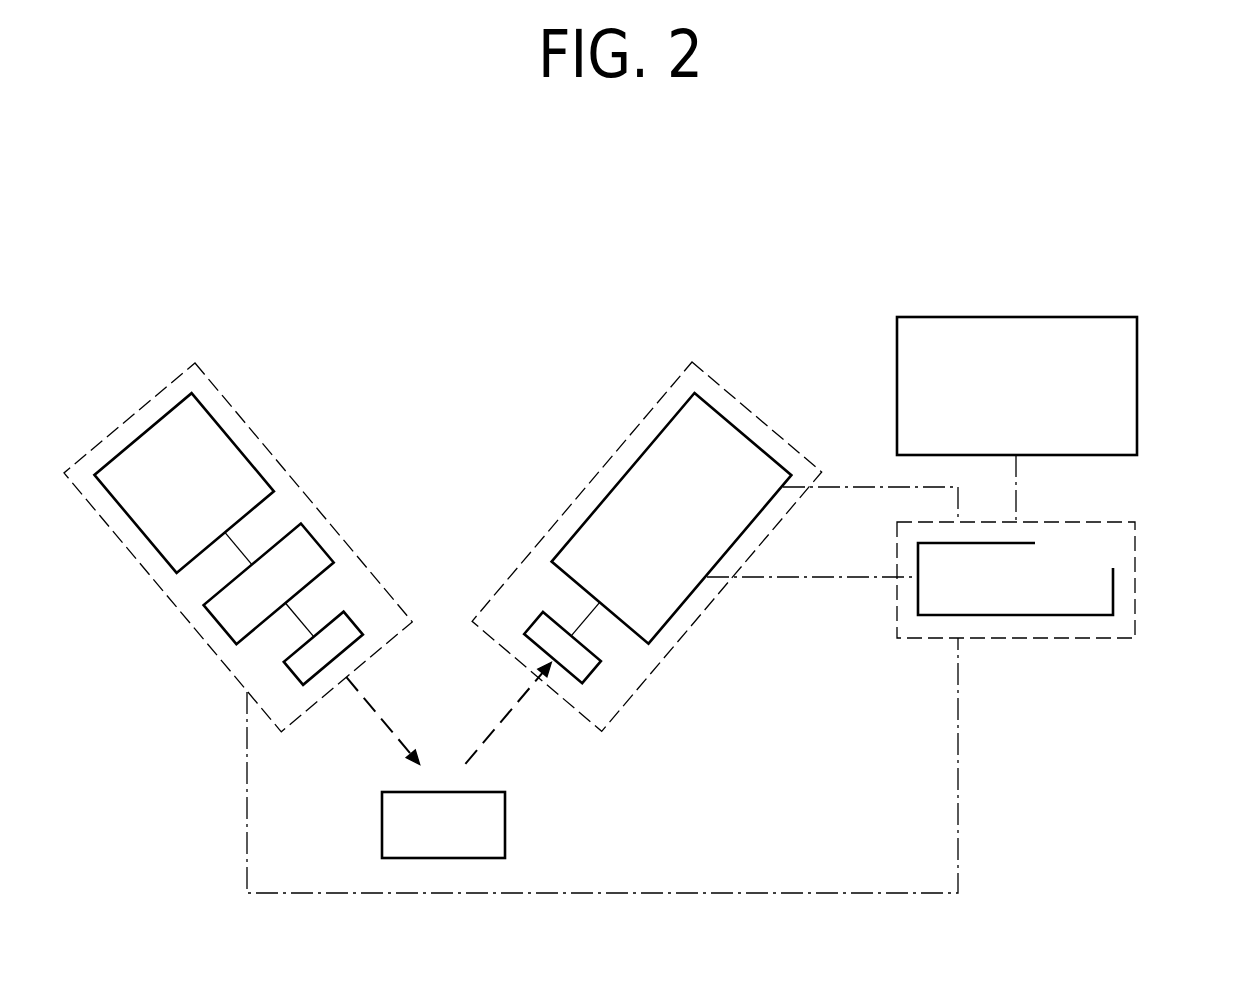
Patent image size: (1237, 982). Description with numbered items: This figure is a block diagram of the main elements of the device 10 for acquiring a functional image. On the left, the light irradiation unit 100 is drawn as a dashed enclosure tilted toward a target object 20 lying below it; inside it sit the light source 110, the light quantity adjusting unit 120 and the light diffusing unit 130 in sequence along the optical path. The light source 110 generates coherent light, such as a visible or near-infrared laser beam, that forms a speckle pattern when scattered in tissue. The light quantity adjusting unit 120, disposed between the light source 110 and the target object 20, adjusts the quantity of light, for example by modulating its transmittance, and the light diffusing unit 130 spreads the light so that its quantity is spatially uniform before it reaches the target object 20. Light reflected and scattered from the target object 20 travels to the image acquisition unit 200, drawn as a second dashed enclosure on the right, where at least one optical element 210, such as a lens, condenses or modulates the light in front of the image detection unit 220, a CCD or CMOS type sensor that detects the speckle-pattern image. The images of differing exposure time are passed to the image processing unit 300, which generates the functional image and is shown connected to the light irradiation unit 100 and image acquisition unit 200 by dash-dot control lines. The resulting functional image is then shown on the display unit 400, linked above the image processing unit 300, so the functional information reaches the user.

The device for acquiring the image 10 is at (104, 291).
The inspection object 20 is at (505, 822).
The light irradiation unit 100 is at (181, 367).
The light source 110 is at (130, 523).
The light quantity adjusting unit 120 is at (205, 603).
The light diffusing unit 130 is at (287, 659).
The image acquisition unit 200 is at (681, 372).
The optical element 210 is at (546, 614).
The image detection unit 220 is at (595, 510).
The image processing unit 300 is at (1113, 578).
The display unit 400 is at (1137, 390).